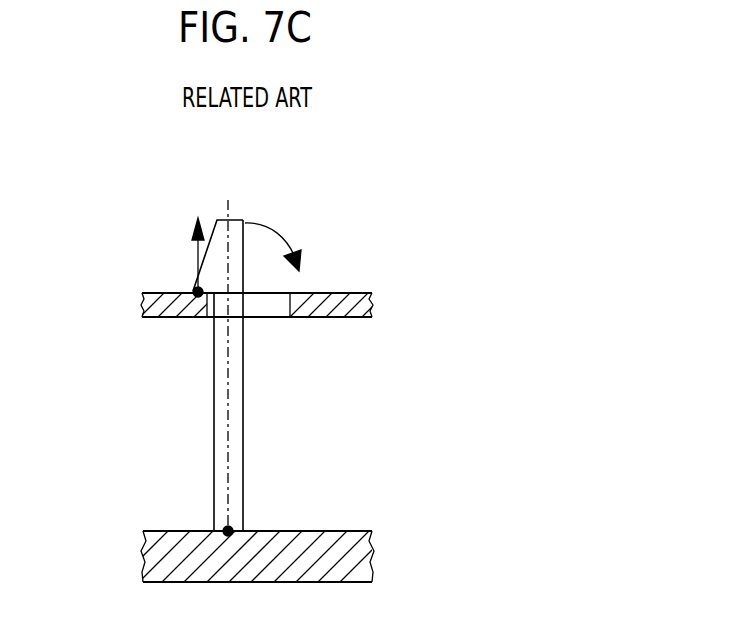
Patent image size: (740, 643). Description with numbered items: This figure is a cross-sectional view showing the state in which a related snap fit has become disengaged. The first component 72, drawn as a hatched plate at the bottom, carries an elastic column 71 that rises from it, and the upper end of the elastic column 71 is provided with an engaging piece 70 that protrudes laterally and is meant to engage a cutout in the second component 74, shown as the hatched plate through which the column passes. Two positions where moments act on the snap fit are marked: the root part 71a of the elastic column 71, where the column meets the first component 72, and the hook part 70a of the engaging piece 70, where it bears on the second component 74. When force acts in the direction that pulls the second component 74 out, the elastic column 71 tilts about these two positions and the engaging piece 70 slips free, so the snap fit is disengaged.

The engaging piece 70 is at (209, 228).
The hook part 70a is at (195, 293).
The elastic column 71 is at (244, 386).
The root part 71a is at (230, 528).
The first component 72 is at (335, 531).
The second component 74 is at (327, 292).